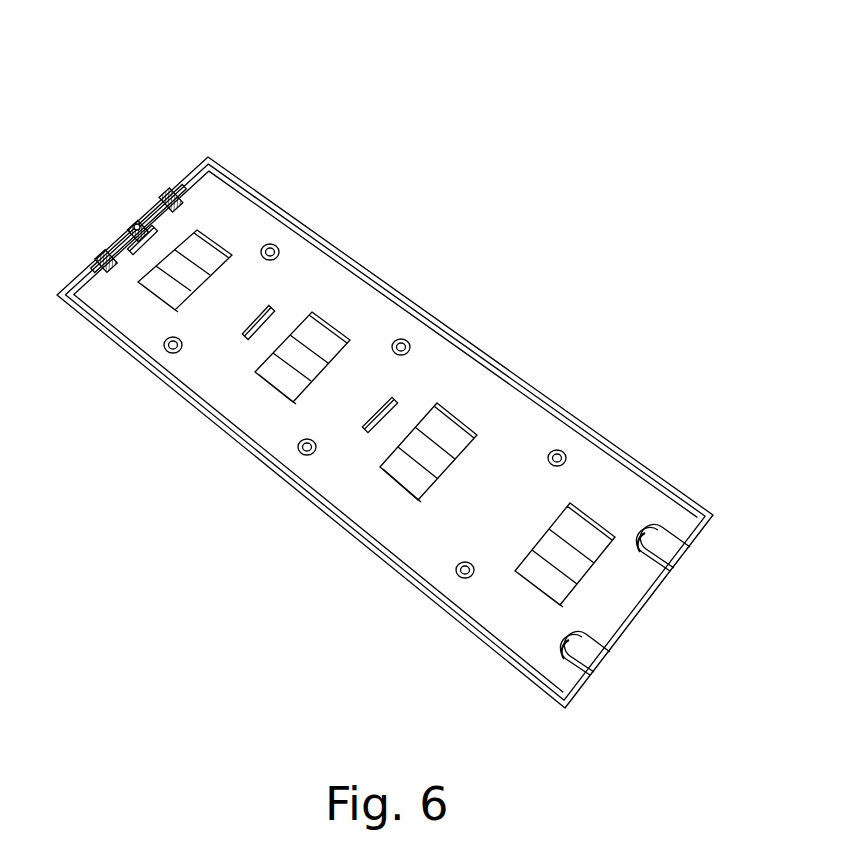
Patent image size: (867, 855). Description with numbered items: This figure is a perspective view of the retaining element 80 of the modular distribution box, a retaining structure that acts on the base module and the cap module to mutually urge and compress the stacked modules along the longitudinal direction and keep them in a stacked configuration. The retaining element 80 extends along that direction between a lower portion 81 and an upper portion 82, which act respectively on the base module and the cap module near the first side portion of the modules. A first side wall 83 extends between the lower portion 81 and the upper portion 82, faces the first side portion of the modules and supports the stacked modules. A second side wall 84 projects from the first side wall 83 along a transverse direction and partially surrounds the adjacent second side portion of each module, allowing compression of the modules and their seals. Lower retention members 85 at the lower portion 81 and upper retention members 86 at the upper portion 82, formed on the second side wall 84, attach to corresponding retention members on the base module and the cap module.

The retaining element 80 is at (214, 79).
The lower portion 81 is at (652, 600).
The upper portion 82 is at (168, 193).
The first side wall 83 is at (478, 388).
The second side wall 84 is at (108, 338).
The lower retention members 85 is at (665, 546).
The upper retention members 86 is at (592, 648).